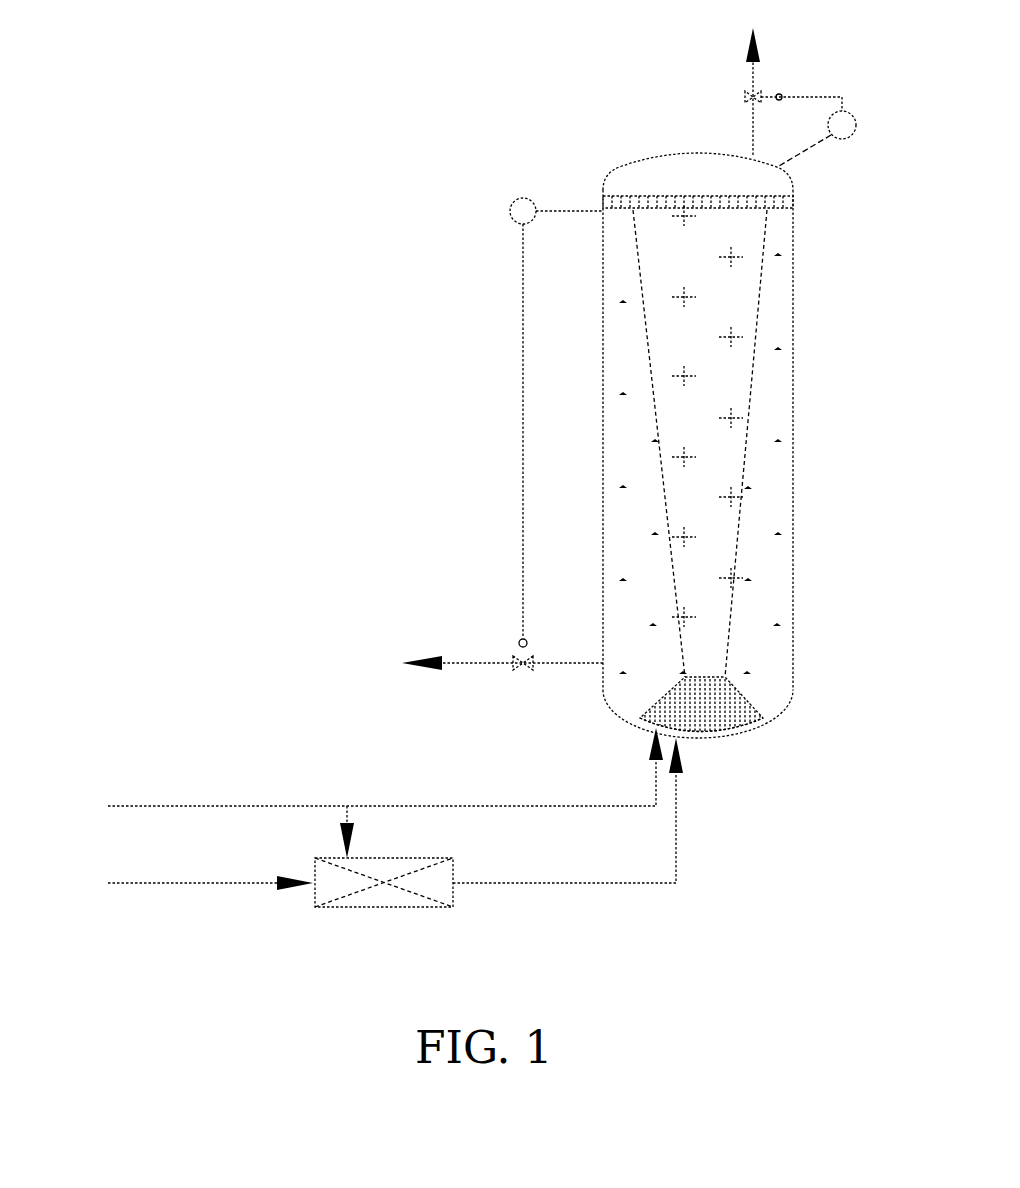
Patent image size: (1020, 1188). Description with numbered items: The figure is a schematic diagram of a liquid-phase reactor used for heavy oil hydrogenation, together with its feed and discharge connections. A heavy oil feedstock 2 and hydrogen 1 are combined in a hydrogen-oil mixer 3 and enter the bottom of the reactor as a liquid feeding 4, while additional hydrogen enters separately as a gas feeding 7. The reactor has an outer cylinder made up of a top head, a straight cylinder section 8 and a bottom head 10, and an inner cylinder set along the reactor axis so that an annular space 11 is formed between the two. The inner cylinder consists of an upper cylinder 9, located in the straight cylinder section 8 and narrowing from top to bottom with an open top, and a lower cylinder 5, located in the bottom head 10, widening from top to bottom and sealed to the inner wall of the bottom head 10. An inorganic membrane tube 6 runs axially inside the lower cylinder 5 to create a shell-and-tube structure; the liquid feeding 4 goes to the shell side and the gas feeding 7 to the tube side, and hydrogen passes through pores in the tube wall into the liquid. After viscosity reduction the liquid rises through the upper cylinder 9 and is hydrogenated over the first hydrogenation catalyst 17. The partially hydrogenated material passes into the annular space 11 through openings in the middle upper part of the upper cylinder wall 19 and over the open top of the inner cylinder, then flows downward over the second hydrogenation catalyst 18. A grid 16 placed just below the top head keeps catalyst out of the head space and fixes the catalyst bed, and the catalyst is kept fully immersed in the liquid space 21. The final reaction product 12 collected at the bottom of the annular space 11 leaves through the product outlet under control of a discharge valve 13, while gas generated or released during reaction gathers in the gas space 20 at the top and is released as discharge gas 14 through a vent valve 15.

The hydrogen 1 is at (363, 809).
The heavy oil feedstock 2 is at (191, 885).
The hydrogen-oil mixer 3 is at (384, 900).
The liquid feeding 4 is at (568, 810).
The lower cylinder 5 is at (698, 721).
The inorganic membrane tube 6 is at (684, 710).
The gas feeding 7 is at (644, 759).
The straight cylinder section 8 is at (671, 440).
The upper cylinder 9 is at (750, 443).
The bottom head 10 is at (701, 765).
The annular space 11 is at (820, 433).
The reaction product 12 is at (489, 438).
The discharge valve 13 is at (524, 676).
The discharge gas 14 is at (755, 80).
The vent valve 15 is at (788, 126).
The grid 16 is at (672, 185).
The first hydrogenation catalyst 17 is at (806, 399).
The second hydrogenation catalyst 18 is at (745, 463).
The upper cylinder wall 19 is at (760, 556).
The gas space 20 is at (686, 161).
The liquid space 21 is at (782, 237).